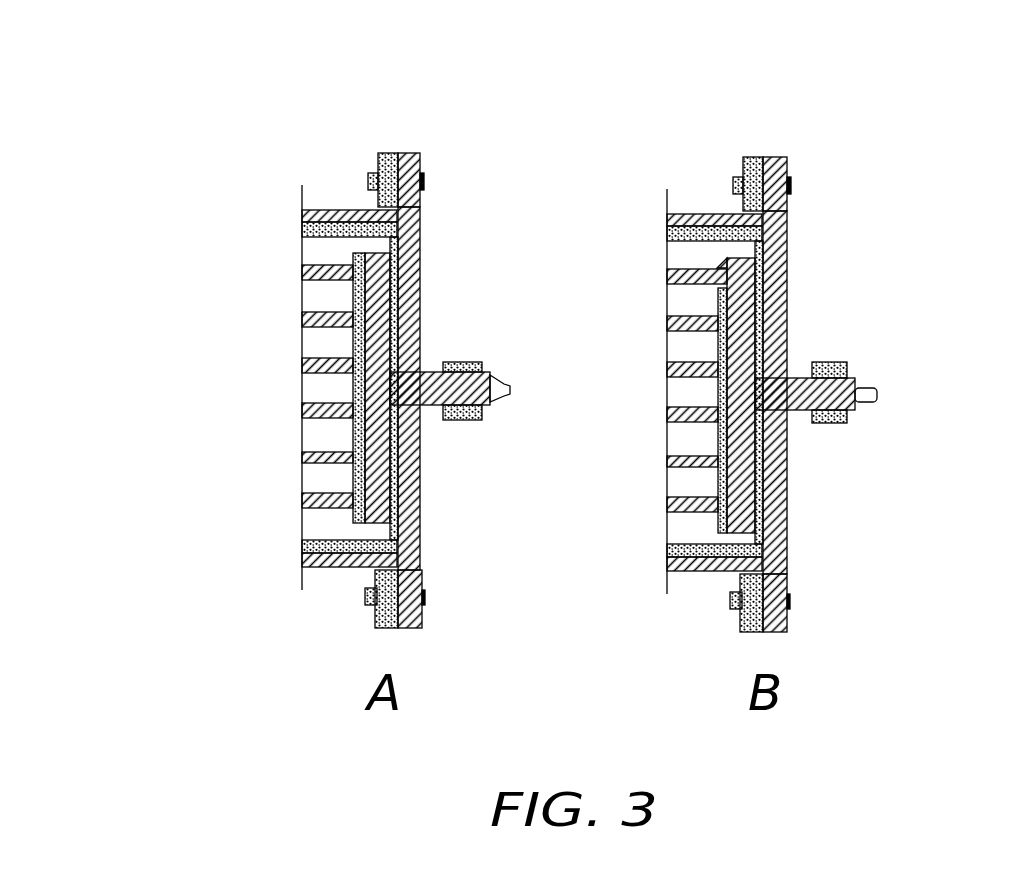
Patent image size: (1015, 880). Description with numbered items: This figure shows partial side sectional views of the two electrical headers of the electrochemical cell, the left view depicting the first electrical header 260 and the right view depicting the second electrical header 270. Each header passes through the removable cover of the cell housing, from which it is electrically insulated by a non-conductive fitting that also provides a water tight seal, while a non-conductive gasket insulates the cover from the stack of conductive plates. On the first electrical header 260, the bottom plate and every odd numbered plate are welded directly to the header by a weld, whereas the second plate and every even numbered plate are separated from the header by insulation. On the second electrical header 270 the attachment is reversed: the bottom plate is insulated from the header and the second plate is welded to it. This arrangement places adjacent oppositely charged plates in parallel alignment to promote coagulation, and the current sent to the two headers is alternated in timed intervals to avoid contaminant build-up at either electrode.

The first electrical header 260 is at (508, 390).
The second electrical header 270 is at (863, 326).